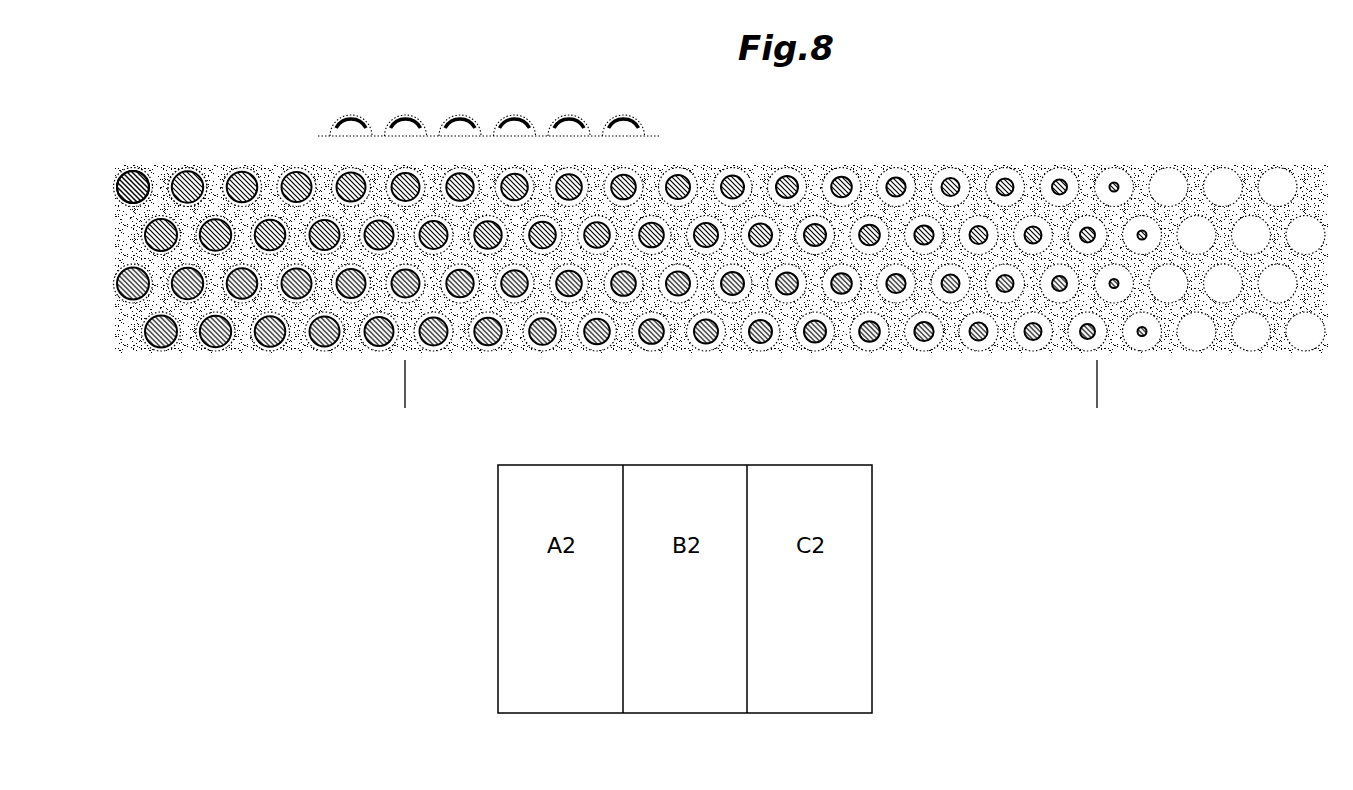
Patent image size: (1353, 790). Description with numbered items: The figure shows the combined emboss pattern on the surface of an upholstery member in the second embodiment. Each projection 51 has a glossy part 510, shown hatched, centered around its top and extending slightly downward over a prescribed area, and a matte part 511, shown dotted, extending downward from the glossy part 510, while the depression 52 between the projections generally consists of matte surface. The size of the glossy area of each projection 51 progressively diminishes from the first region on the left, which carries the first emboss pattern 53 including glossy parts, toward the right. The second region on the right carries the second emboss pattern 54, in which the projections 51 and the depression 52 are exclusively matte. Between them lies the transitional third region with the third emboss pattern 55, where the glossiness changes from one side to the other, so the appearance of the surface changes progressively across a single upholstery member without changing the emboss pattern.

The projection 51 is at (413, 118).
The depression 52 is at (378, 130).
The first emboss pattern 53 is at (207, 377).
The second emboss pattern 54 is at (1246, 390).
The third emboss pattern 55 is at (978, 381).
The glossy part 510 is at (200, 169).
The matte part 511 is at (165, 169).